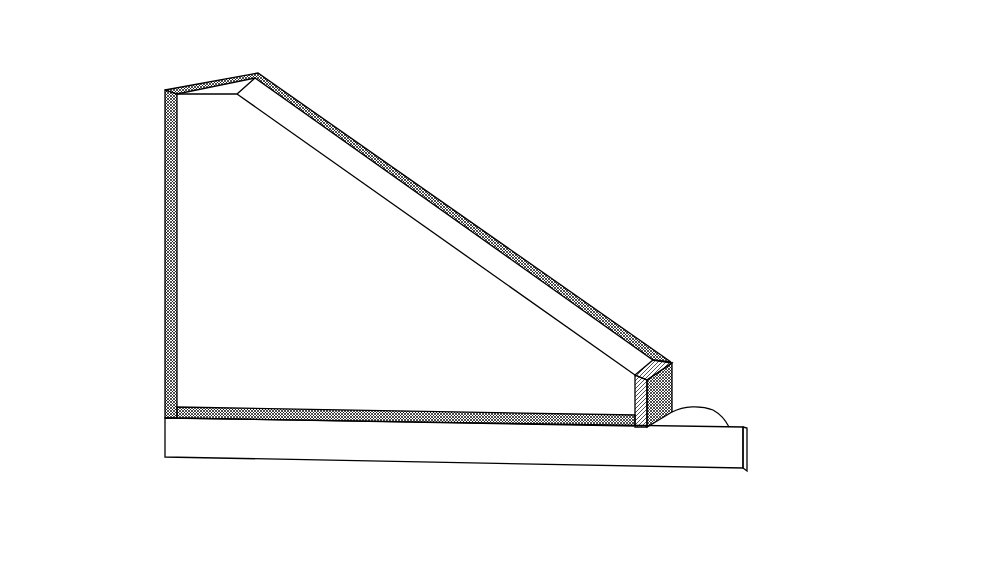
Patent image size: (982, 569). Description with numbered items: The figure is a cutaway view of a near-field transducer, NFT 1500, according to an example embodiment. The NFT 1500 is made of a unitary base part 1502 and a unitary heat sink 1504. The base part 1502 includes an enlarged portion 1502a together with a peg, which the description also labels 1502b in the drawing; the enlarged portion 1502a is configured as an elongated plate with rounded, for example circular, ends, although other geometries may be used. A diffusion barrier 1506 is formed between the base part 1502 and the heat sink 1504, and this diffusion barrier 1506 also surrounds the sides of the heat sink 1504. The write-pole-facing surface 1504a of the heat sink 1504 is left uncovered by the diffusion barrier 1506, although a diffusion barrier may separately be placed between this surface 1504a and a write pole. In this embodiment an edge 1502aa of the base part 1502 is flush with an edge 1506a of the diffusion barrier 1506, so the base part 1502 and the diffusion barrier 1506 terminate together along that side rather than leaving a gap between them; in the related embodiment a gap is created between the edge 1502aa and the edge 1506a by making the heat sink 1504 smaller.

The near-field transducer 1500 is at (600, 137).
The base part 1502 is at (260, 460).
The enlarged portion 1502a is at (528, 450).
The base end face 1502b is at (738, 458).
The edge of the base part 1502aa is at (167, 438).
The heat sink 1504 is at (262, 132).
The write-pole-facing surface 1504a is at (580, 317).
The diffusion barrier 1506 is at (671, 391).
The edge of the diffusion barrier 1506a is at (165, 267).